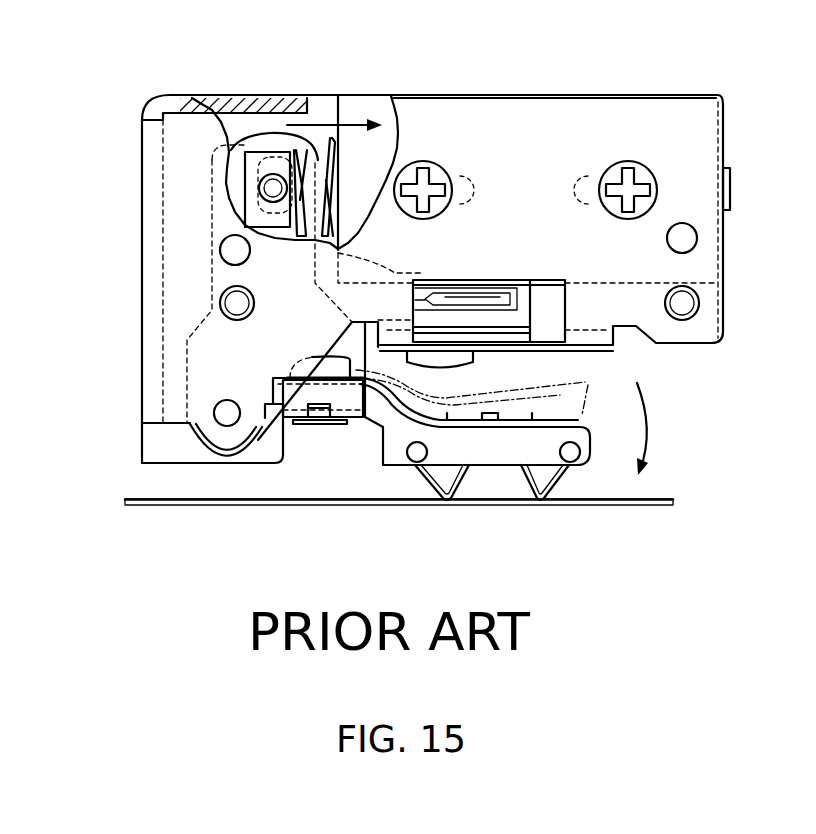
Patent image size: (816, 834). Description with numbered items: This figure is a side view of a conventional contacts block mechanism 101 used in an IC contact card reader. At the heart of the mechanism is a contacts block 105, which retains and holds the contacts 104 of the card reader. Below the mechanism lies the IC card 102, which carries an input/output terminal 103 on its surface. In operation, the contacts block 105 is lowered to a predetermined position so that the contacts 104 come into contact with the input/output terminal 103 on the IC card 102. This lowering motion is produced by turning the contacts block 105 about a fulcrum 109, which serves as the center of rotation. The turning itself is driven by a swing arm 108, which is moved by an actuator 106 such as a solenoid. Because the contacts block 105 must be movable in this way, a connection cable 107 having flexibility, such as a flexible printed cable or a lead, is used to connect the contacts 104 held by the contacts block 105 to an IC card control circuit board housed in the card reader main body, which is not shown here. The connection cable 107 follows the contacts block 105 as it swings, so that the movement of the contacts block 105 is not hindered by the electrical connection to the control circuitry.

The contacts block mechanism 101 is at (88, 109).
The IC card 102 is at (263, 505).
The input/output terminal 103 is at (543, 505).
The contacts 104 is at (423, 470).
The contacts block 105 is at (383, 427).
The actuator 106 is at (360, 110).
The connection cable 107 is at (560, 420).
The swing arm 108 is at (247, 140).
The fulcrum 109 is at (213, 415).